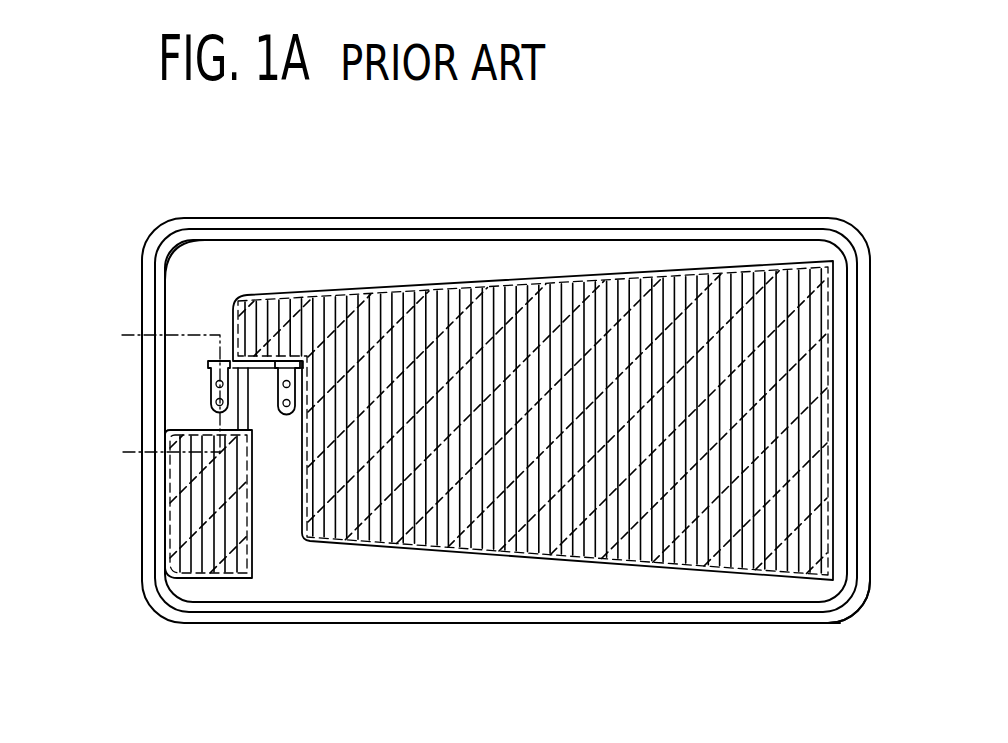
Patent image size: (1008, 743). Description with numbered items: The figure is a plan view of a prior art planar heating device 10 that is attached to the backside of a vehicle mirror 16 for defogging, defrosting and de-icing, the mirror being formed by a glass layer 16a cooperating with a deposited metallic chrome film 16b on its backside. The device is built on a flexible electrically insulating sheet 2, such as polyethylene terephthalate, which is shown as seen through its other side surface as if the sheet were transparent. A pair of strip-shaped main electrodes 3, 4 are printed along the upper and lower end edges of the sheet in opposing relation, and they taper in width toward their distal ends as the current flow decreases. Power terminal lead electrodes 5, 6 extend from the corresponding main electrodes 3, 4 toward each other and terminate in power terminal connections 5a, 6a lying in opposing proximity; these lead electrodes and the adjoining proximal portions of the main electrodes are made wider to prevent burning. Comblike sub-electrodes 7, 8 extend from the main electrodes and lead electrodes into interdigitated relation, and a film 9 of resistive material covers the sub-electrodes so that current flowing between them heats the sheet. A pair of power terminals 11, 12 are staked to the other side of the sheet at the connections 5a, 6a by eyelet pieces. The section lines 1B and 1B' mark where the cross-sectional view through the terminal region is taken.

The planar heating device 10 is at (200, 227).
The insulating sheet 2 is at (272, 230).
The main electrode 3 is at (570, 255).
The main electrode 4 is at (440, 583).
The power terminal lead electrode 5 is at (208, 308).
The power terminal connection 5a is at (207, 401).
The power terminal lead electrode 6 is at (288, 495).
The power terminal connection 6a is at (275, 410).
The comblike sub-electrode 7 is at (730, 283).
The comblike sub-electrode 8 is at (157, 548).
The film of resistive material 9 is at (433, 283).
The power terminal 11 is at (208, 374).
The power terminal 12 is at (275, 390).
The mirror 16 is at (848, 691).
The glass layer 16a is at (795, 628).
The metallic chrome film 16b is at (807, 656).
The section line 1B is at (153, 386).
The section line 1B' is at (153, 453).